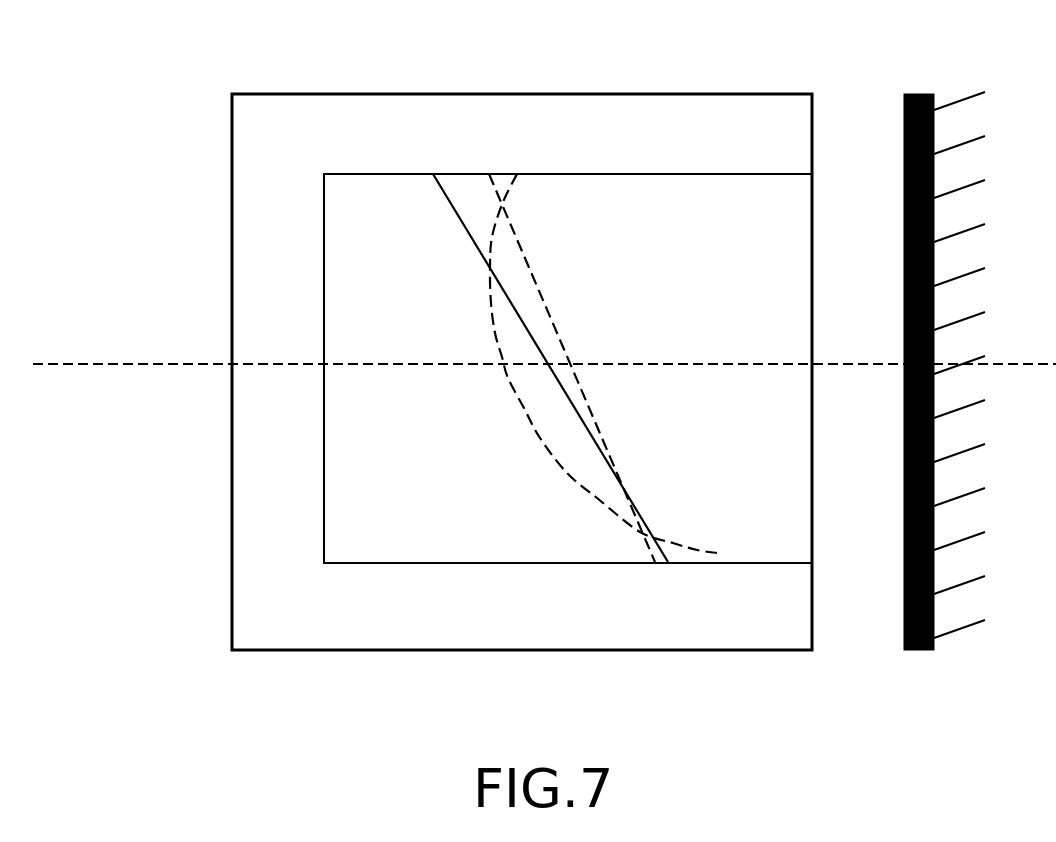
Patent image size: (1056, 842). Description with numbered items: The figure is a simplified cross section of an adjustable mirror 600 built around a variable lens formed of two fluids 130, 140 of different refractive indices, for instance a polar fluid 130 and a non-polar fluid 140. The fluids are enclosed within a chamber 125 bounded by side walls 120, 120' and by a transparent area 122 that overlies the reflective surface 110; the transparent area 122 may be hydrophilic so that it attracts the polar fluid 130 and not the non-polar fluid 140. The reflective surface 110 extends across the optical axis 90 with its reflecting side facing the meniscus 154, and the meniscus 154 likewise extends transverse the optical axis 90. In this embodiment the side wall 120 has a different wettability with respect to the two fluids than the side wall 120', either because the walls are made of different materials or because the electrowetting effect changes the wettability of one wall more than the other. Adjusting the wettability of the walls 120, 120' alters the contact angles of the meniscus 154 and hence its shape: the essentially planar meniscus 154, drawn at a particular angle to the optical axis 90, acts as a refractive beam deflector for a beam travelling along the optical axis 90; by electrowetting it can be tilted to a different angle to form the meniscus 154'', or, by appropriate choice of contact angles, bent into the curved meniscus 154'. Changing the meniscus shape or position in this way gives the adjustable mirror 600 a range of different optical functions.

The optical axis 90 is at (88, 364).
The reflective surface 110 is at (920, 85).
The side wall 120 is at (483, 442).
The side wall 120' is at (568, 105).
The transparent area 122 is at (813, 210).
The chamber 125 is at (342, 497).
The fluid 130 is at (742, 525).
The fluid 140 is at (445, 525).
The meniscus 154 is at (550, 299).
The curved meniscus 154' is at (603, 442).
The meniscus 154'' is at (572, 299).
The adjustable mirror 600 is at (971, 626).